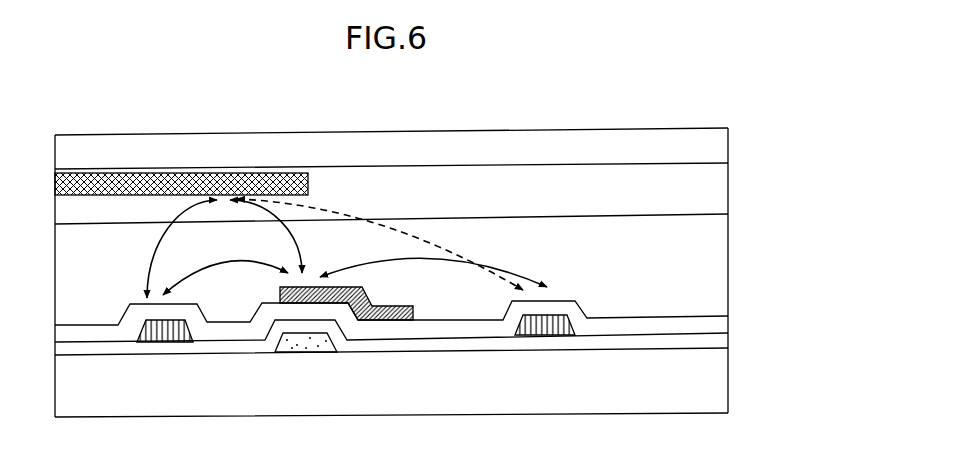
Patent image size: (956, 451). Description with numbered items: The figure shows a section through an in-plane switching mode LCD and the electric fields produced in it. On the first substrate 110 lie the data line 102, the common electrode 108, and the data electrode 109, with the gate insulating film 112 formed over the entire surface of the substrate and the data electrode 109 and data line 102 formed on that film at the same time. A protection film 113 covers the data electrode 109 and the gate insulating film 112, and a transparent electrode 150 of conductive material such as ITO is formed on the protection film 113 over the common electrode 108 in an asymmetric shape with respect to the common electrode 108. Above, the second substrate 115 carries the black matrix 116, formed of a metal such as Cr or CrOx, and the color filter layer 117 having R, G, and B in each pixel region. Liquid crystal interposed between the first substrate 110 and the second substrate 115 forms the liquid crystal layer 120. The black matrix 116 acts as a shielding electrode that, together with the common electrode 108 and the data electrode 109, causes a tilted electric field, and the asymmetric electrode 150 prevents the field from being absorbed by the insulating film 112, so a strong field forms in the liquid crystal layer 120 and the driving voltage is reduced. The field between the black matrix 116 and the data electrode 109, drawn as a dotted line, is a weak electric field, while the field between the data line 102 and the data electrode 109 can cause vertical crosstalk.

The data line 102 is at (165, 343).
The common electrode 108 is at (303, 345).
The data electrode 109 is at (545, 335).
The first substrate 110 is at (718, 380).
The gate insulating film 112 is at (718, 341).
The protection film 113 is at (718, 321).
The second substrate 115 is at (718, 147).
The black matrix 116 is at (176, 173).
The color filter layer 117 is at (718, 190).
The liquid crystal layer 120 is at (718, 272).
The electrode 150 is at (388, 322).